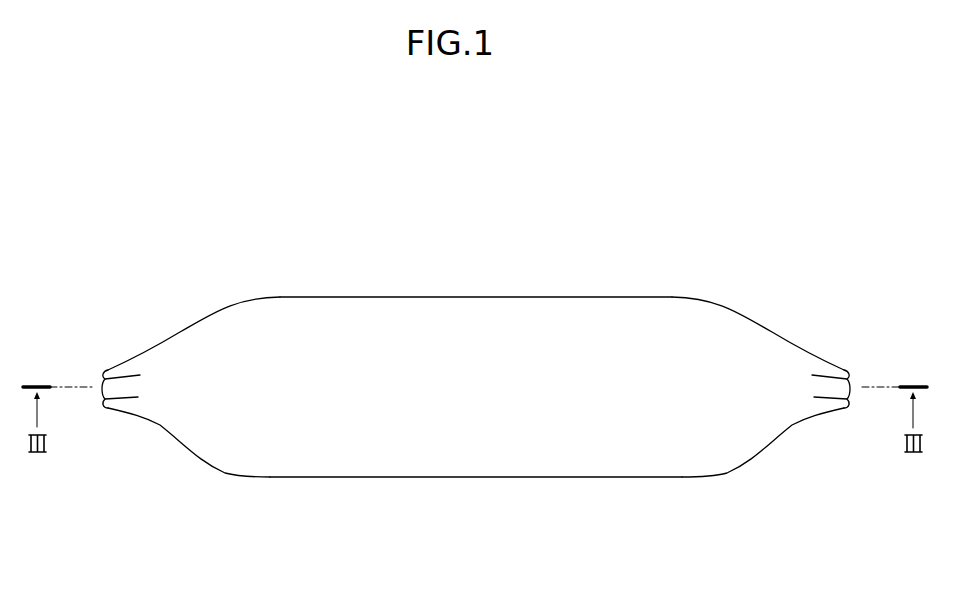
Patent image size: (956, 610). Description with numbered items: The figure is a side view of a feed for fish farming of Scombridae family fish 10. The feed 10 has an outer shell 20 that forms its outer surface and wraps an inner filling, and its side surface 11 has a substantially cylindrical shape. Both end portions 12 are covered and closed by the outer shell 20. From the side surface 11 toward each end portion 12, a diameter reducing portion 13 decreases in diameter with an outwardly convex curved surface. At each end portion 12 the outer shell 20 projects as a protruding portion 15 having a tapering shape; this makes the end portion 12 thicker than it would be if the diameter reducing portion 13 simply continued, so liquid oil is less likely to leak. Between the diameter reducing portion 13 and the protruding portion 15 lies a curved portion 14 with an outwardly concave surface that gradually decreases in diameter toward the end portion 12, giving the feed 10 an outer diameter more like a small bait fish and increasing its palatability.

The feed for fish farming of Scombridae family fish 10 is at (368, 255).
The side surface 11 is at (513, 297).
The end portion 12 is at (97, 368).
The diameter reducing portion 13 is at (210, 312).
The curved portion 14 is at (158, 422).
The protruding portion 15 is at (125, 412).
The outer shell 20 is at (480, 453).